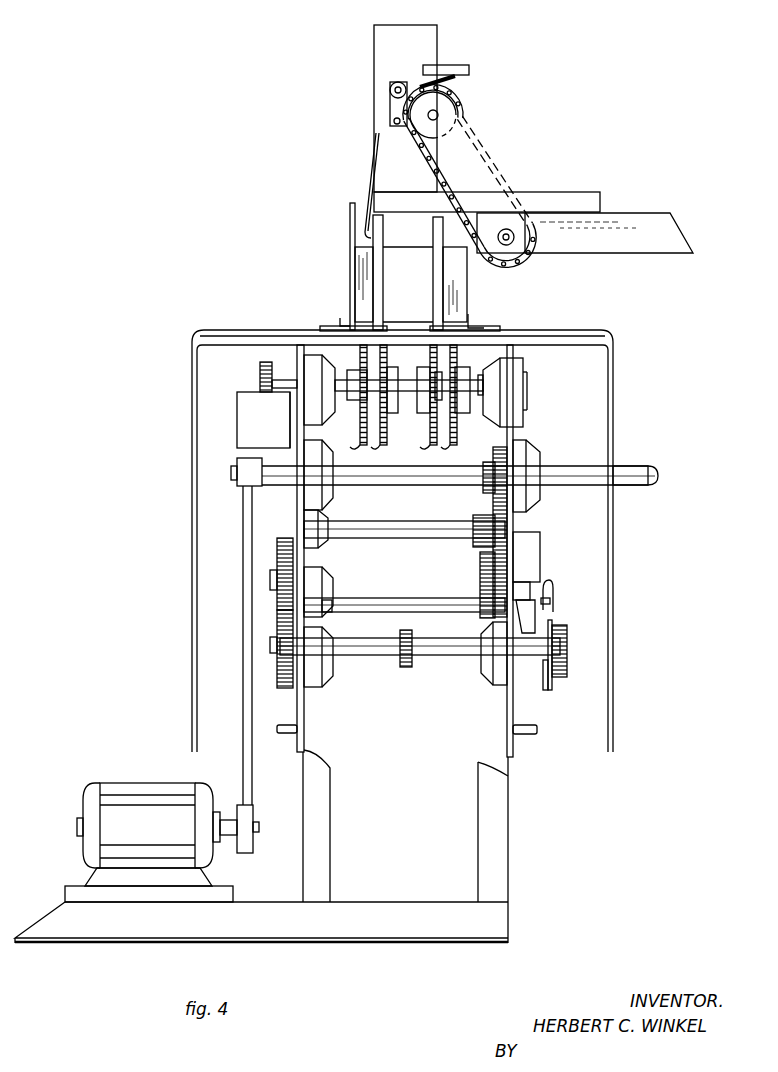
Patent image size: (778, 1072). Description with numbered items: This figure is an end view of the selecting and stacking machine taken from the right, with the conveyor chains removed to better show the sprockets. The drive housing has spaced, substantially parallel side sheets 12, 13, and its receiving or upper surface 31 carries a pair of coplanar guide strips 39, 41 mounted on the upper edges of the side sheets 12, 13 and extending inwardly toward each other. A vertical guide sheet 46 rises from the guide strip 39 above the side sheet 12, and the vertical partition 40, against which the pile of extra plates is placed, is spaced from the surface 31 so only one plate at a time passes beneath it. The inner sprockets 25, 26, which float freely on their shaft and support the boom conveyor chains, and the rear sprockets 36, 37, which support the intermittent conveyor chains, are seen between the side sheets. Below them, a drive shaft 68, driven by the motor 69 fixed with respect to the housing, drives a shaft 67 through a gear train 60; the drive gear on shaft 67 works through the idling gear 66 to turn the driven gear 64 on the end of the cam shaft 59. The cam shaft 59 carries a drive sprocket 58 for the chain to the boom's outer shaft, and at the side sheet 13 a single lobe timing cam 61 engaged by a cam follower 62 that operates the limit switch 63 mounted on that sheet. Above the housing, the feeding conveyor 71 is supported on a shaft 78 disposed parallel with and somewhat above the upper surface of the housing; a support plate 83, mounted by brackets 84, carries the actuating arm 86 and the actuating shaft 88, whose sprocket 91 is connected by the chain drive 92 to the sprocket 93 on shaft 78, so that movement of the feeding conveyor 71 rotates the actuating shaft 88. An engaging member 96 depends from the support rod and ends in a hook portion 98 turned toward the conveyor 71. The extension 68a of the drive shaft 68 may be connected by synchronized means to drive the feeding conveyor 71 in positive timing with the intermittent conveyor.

The support plate 83 is at (430, 43).
The actuating arm 86 is at (395, 106).
The actuating shaft 88 is at (437, 112).
The sprocket 91 is at (448, 118).
The chain drive 92 is at (466, 121).
The engaging member 96 is at (365, 193).
The bracket 84 is at (552, 195).
The feeding conveyor 71 is at (618, 197).
The vertical guide sheet 46 is at (348, 233).
The hook portion 98 is at (385, 246).
The sprocket 93 is at (516, 238).
The shaft 78 is at (508, 241).
The vertical partition 40 is at (456, 276).
The guide strip 39 is at (345, 327).
The upper surface 31 is at (471, 327).
The guide strip 41 is at (493, 334).
The inner sprocket 25 is at (358, 447).
The rear sprocket 36 is at (380, 447).
The rear sprocket 37 is at (430, 447).
The inner sprocket 26 is at (455, 447).
The drive shaft 68 is at (381, 486).
The extension 68a is at (641, 471).
The side sheet 12 is at (296, 507).
The side sheet 13 is at (517, 527).
The idling gear 66 is at (279, 556).
The driven gear 64 is at (285, 690).
The shaft 67 is at (357, 606).
The gear train 60 is at (478, 568).
The limit switch 63 is at (537, 553).
The cam follower 62 is at (552, 600).
The single lobe timing cam 61 is at (553, 626).
The drive sprocket 58 is at (405, 668).
The cam shaft 59 is at (446, 657).
The motor 69 is at (92, 784).